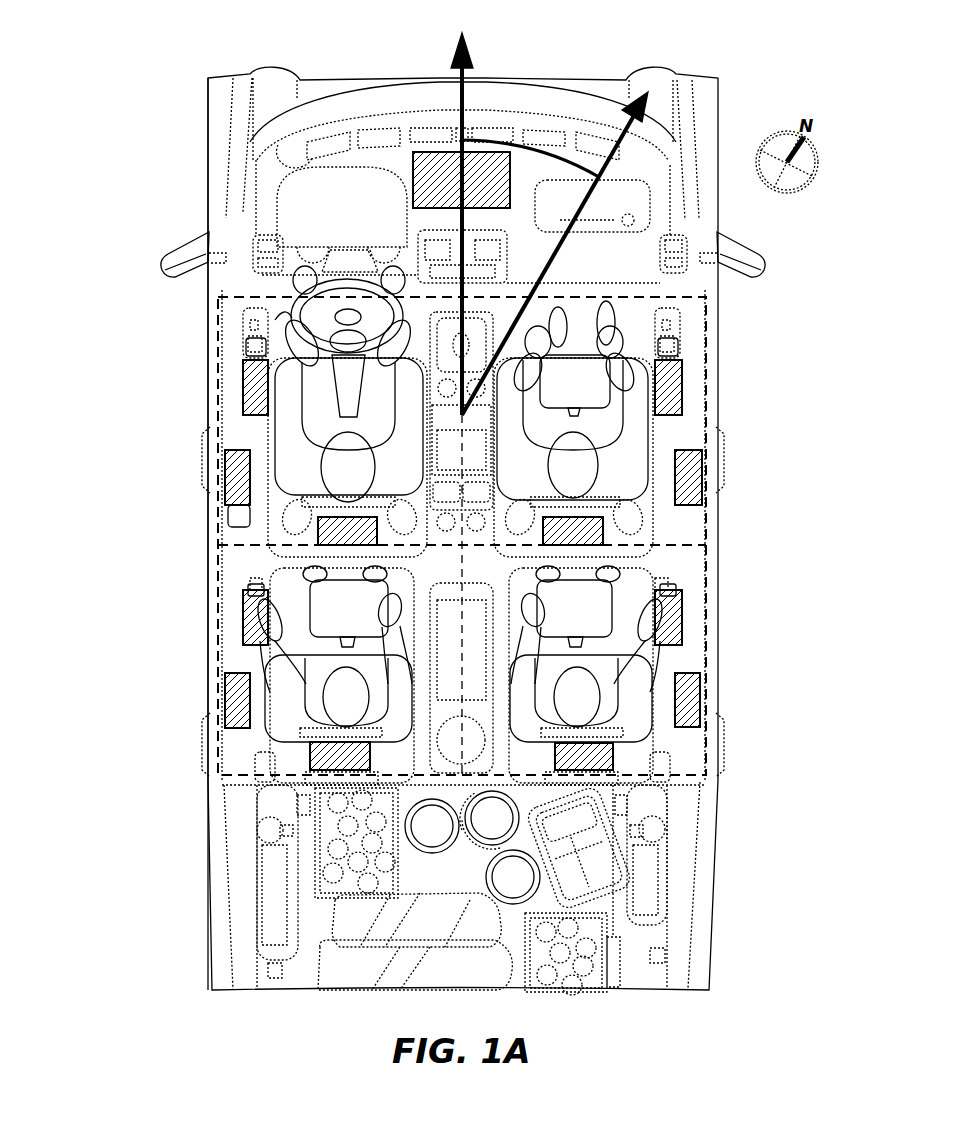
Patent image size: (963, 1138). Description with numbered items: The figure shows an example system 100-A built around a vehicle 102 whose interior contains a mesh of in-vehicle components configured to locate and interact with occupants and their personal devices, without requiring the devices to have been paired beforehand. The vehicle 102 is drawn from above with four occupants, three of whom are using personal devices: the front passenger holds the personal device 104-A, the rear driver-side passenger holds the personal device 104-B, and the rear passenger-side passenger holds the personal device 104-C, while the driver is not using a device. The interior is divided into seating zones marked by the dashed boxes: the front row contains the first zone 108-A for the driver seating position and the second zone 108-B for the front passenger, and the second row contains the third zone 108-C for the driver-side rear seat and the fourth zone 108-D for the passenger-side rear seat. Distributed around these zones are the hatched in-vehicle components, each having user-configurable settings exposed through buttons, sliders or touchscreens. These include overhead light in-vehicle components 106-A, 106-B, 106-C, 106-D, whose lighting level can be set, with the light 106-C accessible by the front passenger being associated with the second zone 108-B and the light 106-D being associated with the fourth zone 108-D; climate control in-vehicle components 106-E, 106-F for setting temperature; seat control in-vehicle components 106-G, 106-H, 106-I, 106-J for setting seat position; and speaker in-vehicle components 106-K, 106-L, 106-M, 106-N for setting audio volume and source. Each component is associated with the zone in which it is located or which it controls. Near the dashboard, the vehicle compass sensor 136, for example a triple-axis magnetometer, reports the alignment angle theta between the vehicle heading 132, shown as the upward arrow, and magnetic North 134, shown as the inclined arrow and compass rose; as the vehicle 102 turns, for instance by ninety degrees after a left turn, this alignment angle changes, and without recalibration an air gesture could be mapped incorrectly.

The system 100-A is at (184, 52).
The vehicle 102 is at (207, 175).
The personal device 104-A is at (623, 357).
The personal device 104-B is at (310, 580).
The personal device 104-C is at (612, 580).
The overhead light in-vehicle component 106-A is at (225, 478).
The overhead light in-vehicle component 106-B is at (225, 700).
The overhead light in-vehicle component 106-C is at (702, 478).
The overhead light in-vehicle component 106-D is at (700, 700).
The climate control in-vehicle component 106-E is at (280, 322).
The climate control in-vehicle component 106-F is at (318, 530).
The seat control in-vehicle component 106-G is at (243, 372).
The seat control in-vehicle component 106-H is at (248, 592).
The seat control in-vehicle component 106-I is at (668, 372).
The seat control in-vehicle component 106-J is at (670, 592).
The speaker in-vehicle component 106-K is at (228, 520).
The speaker in-vehicle component 106-L is at (310, 755).
The speaker in-vehicle component 106-M is at (603, 530).
The speaker in-vehicle component 106-N is at (613, 755).
The first zone 108-A is at (243, 412).
The second zone 108-B is at (682, 412).
The third zone 108-C is at (243, 640).
The fourth zone 108-D is at (682, 630).
The vehicle heading 132 is at (492, 84).
The magnetic North 134 is at (613, 100).
The vehicle compass sensor 136 is at (432, 150).